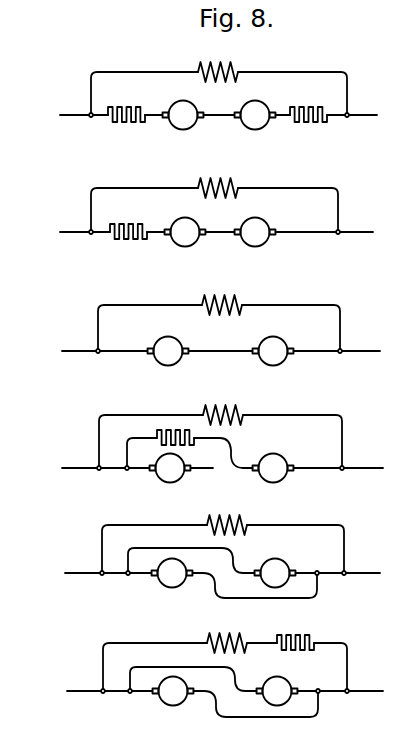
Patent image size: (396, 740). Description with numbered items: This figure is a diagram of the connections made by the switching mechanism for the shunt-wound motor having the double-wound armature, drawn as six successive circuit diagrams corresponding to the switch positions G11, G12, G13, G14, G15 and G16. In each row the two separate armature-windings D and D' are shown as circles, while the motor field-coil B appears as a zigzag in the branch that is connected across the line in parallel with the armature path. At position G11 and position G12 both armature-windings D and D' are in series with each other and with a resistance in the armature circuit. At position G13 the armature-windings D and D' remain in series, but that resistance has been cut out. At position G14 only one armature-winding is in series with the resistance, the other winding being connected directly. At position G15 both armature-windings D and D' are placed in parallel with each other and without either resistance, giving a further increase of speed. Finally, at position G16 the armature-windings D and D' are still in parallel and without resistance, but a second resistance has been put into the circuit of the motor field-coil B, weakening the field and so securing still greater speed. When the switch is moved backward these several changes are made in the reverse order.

The switch position G11 is at (198, 86).
The switch position G12 is at (196, 212).
The switch position G13 is at (199, 330).
The switch position G14 is at (201, 444).
The switch position G15 is at (199, 556).
The switch position G16 is at (201, 666).
The motor field-coil B is at (218, 62).
The armature-winding D is at (183, 107).
The armature-winding D' is at (255, 106).